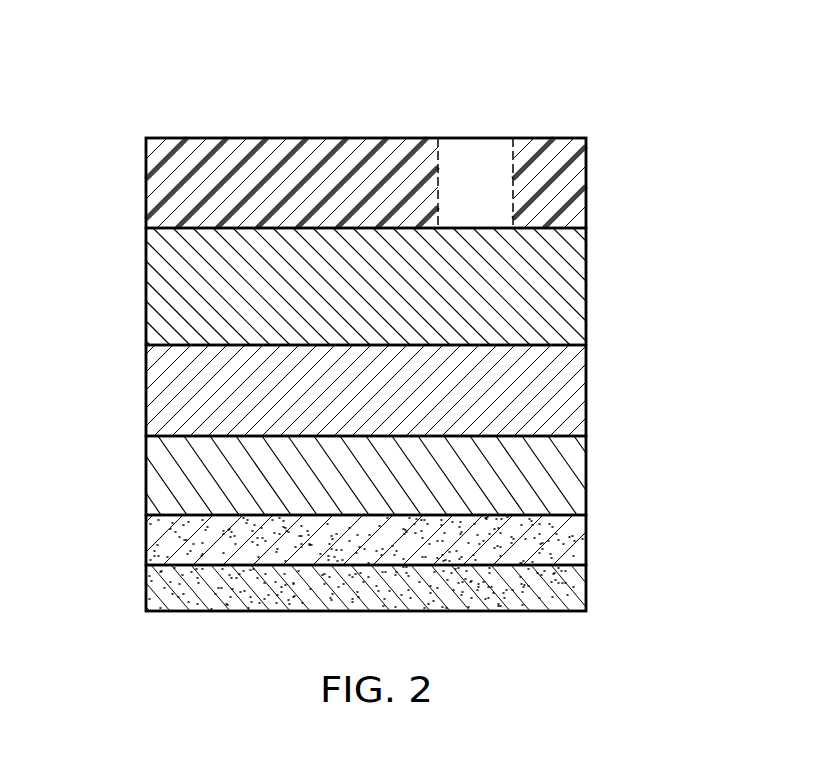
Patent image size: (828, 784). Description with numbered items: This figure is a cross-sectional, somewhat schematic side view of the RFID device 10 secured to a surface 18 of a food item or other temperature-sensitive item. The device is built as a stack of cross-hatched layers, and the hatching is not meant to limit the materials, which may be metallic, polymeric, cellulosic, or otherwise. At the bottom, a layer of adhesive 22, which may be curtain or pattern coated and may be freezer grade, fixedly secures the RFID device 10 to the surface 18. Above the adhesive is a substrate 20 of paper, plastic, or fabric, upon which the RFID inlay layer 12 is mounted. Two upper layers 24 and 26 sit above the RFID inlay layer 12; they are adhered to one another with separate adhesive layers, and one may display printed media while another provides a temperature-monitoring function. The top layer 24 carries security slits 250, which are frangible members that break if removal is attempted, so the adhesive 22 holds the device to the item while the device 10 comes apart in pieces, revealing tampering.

The RFID device 10 is at (315, 319).
The top layer 24 is at (586, 183).
The security slits 250 is at (437, 162).
The upper layer 26 is at (586, 288).
The RFID inlay layer 12 is at (586, 390).
The substrate 20 is at (586, 477).
The layer of adhesive 22 is at (586, 540).
The surface of the item 18 is at (586, 588).